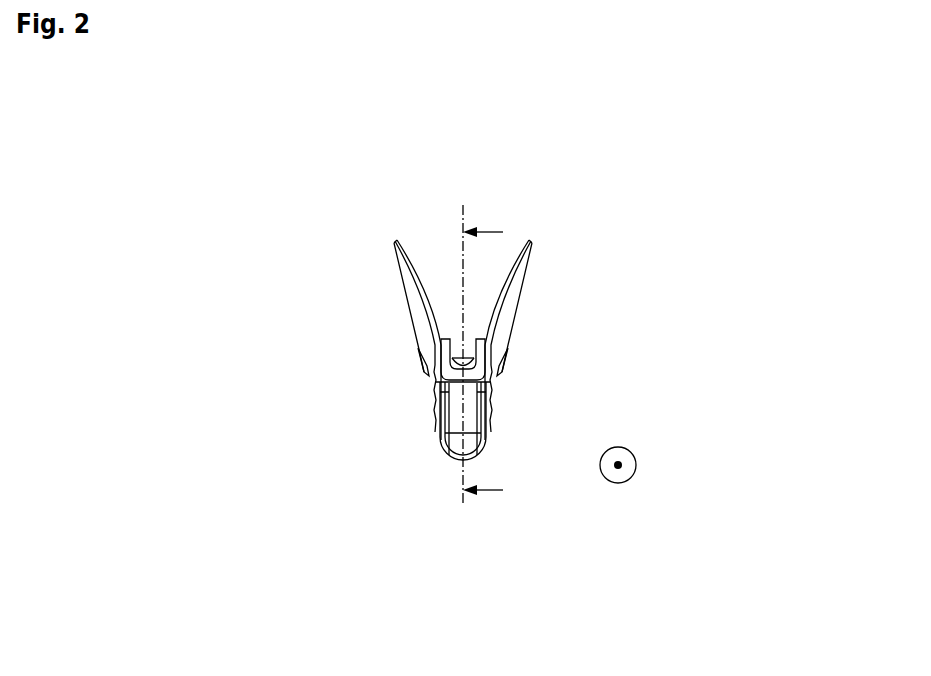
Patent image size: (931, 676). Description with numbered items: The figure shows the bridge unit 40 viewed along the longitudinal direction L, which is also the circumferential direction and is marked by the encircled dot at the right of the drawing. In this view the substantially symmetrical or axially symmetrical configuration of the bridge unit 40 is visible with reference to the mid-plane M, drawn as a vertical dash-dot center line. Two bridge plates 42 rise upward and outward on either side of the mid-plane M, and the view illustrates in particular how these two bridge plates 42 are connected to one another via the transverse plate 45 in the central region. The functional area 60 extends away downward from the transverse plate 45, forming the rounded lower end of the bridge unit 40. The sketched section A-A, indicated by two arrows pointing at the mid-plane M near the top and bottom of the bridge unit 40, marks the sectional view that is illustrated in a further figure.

The bridge unit 40 is at (353, 195).
The bridge plates 42 is at (517, 292).
The transverse plate 45 is at (455, 410).
The functional area 60 is at (455, 462).
The mid-plane M is at (465, 213).
The section A- A is at (503, 355).
The longitudinal direction L is at (621, 470).